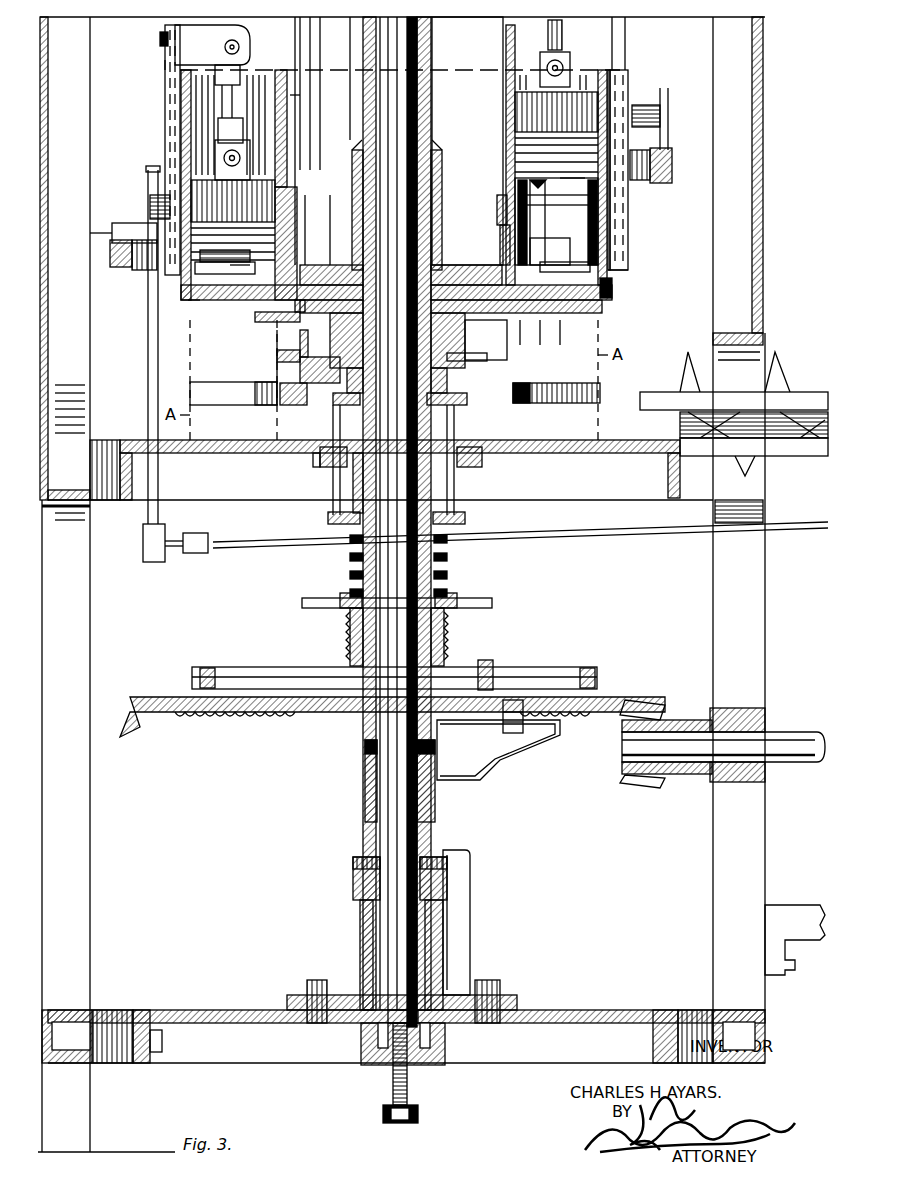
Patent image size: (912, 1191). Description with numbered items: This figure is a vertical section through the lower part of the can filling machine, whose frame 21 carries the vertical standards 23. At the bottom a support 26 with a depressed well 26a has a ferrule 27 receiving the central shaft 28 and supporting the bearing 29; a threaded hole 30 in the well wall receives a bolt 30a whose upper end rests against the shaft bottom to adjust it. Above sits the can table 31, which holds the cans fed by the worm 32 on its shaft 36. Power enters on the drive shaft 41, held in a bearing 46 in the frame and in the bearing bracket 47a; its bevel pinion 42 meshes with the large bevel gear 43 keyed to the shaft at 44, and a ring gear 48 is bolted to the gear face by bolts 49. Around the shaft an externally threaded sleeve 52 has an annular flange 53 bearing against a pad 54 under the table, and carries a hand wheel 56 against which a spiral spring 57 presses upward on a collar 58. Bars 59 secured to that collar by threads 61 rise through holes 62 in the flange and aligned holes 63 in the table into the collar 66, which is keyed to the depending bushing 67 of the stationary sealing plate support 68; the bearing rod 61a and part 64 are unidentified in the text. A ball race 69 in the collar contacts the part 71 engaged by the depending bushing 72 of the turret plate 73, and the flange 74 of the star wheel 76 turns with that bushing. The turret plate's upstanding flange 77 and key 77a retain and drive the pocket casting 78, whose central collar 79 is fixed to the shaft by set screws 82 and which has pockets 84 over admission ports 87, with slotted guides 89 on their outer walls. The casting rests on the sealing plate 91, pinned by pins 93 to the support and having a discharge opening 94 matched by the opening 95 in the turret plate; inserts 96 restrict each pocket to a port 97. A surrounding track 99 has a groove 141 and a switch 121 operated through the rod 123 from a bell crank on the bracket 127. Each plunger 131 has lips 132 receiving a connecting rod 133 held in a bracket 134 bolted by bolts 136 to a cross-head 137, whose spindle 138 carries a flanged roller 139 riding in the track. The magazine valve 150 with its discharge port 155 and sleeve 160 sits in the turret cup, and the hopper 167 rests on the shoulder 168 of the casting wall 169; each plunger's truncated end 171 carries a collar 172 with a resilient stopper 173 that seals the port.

The frame 21 is at (92, 640).
The vertical standards 23 is at (411, 513).
The support 26 is at (557, 1010).
The depressed well 26a is at (432, 1065).
The ferrule 27 is at (455, 950).
The shaft 28 is at (390, 943).
The bearing 29 is at (353, 878).
The screw threaded hole 30 is at (445, 1048).
The bolt 30a is at (395, 1123).
The can table 31 is at (553, 453).
The worm 32 is at (688, 352).
The shaft 36 is at (790, 405).
The drive shaft 41 is at (790, 732).
The bevel pinion 42 is at (632, 783).
The large bevel gear 43 is at (665, 700).
The key 44 is at (365, 740).
The bearing 46 is at (765, 708).
The bearing bracket 47a is at (795, 940).
The ring gear 48 is at (588, 667).
The bolts 49 is at (488, 660).
The externally threaded sleeve 52 is at (444, 635).
The annular flange 53 is at (482, 465).
The pad 54 is at (313, 462).
The hand wheel 56 is at (450, 598).
The spiral spring 57 is at (447, 575).
The collar 58 is at (465, 517).
The vertically disposed bars 59 is at (328, 517).
The threads 61 is at (337, 520).
The central rod 61a is at (397, 522).
The holes 62 is at (353, 480).
The aligned holes 63 is at (454, 440).
The nut 64 is at (340, 405).
The collar 66 is at (300, 405).
The depending bushing 67 is at (397, 356).
The sealing plate support 68 is at (470, 325).
The ball race 69 is at (457, 379).
The part 71 is at (500, 363).
The depending bushing 72 is at (311, 356).
The turret plate 73 is at (573, 337).
The flange 74 is at (270, 322).
The star wheel 76 is at (230, 382).
The peripheral upstanding flange 77 is at (612, 288).
The key 77a is at (615, 275).
The pocket casting 78 is at (628, 235).
The central upstanding collar 79 is at (430, 135).
The set screws 82 is at (432, 262).
The pockets 84 is at (394, 162).
The admission port 87 is at (540, 228).
The slotted guides 89 is at (165, 82).
The sealing plate 91 is at (394, 351).
The pins 93 is at (325, 290).
The discharge opening 94 is at (215, 290).
The discharge opening 95 is at (225, 285).
The inserts 96 is at (582, 255).
The port 97 is at (548, 333).
The track 99 is at (120, 267).
The switch 121 is at (90, 233).
The rod 123 is at (585, 532).
The bracket 127 is at (800, 456).
The plunger 131 is at (394, 176).
The lips 132 is at (395, 116).
The connecting rod 133 is at (240, 100).
The bracket 134 is at (212, 45).
The bolts 136 is at (160, 38).
The cross-head 137 is at (165, 63).
The bearing spindle 138 is at (150, 210).
The flanged roller 139 is at (150, 170).
The groove 141 is at (658, 183).
The magazine or valve member 150 is at (497, 200).
The elongated discharge port 155 is at (500, 232).
The central concentric sleeve 160 is at (442, 160).
The hopper 167 is at (503, 42).
The shoulder 168 is at (300, 105).
The wall 169 is at (305, 130).
The truncated lower end 171 is at (190, 310).
The collar 172 is at (548, 198).
The resilient stopper 173 is at (195, 310).